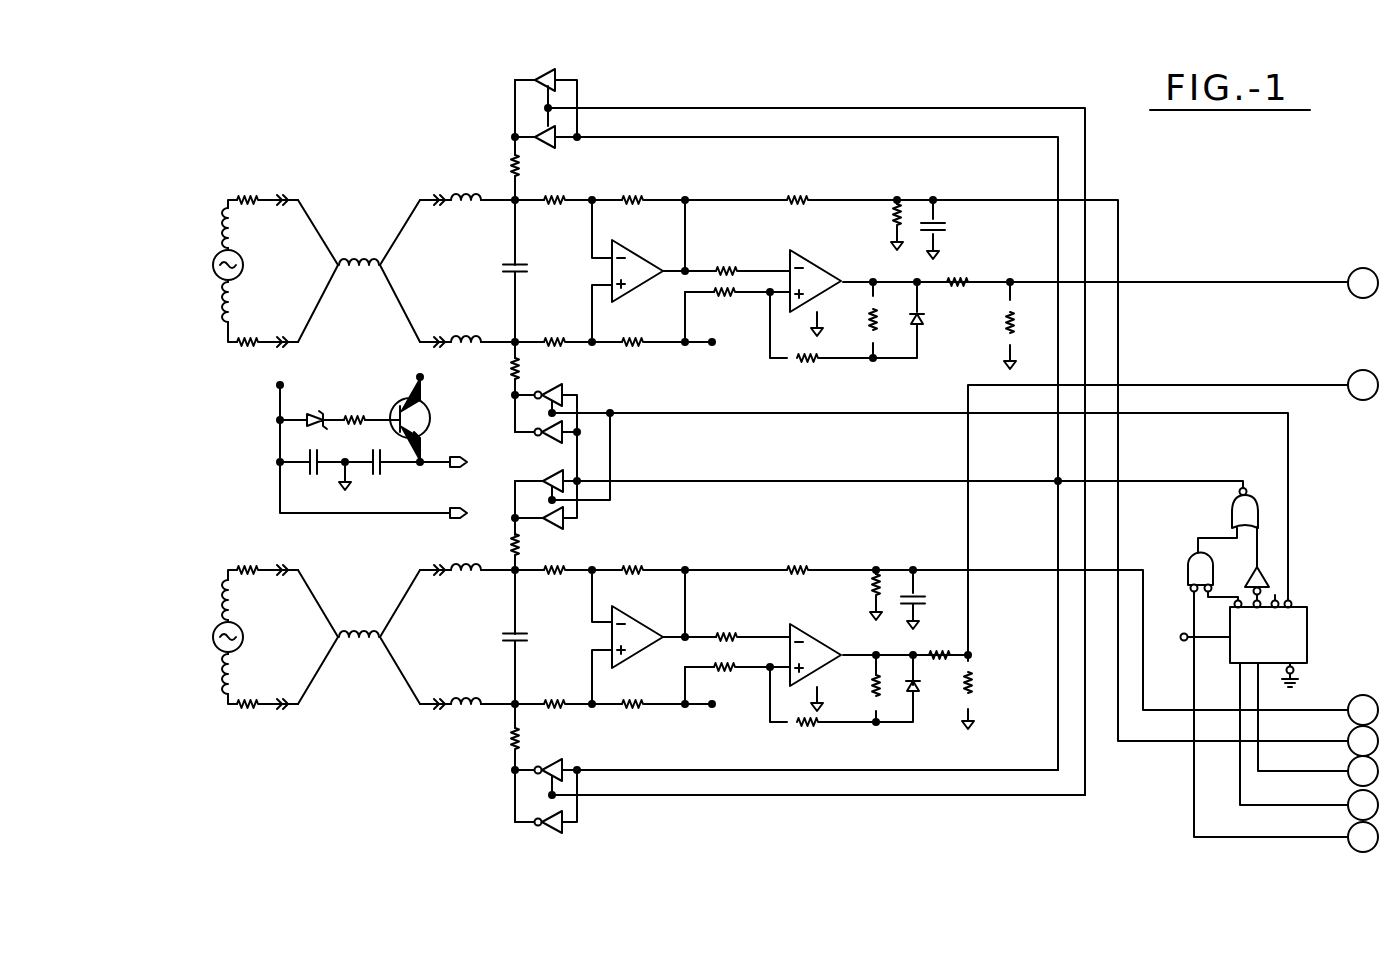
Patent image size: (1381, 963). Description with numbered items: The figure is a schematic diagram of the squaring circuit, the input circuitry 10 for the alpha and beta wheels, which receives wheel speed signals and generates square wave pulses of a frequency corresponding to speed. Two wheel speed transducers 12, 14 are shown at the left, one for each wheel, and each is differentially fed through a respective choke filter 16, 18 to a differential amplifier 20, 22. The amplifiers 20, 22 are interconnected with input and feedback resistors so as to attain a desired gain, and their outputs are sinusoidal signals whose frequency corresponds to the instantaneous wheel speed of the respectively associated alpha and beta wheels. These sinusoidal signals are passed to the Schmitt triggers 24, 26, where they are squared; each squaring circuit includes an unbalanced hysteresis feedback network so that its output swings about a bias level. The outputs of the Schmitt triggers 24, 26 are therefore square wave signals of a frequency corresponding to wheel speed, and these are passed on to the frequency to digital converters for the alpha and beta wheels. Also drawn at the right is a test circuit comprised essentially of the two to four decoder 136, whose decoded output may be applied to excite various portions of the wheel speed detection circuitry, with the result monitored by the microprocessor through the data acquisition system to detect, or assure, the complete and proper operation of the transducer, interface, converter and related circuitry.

The input circuitry 10 is at (1200, 215).
The wheel speed transducer 12 is at (216, 262).
The wheel speed transducer 14 is at (216, 634).
The choke filter 16 is at (458, 168).
The choke filter 18 is at (460, 722).
The differential amplifier 20 is at (626, 296).
The differential amplifier 22 is at (630, 662).
The Schmitt trigger 24 is at (822, 270).
The Schmitt trigger 26 is at (816, 634).
The two to four decoder 136 is at (1307, 620).